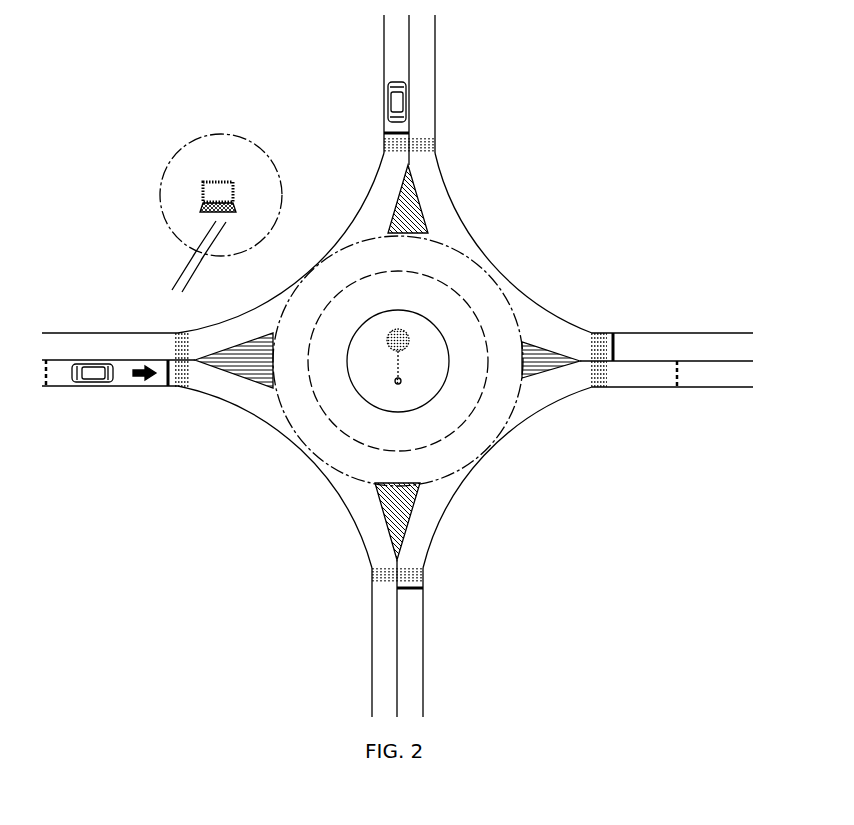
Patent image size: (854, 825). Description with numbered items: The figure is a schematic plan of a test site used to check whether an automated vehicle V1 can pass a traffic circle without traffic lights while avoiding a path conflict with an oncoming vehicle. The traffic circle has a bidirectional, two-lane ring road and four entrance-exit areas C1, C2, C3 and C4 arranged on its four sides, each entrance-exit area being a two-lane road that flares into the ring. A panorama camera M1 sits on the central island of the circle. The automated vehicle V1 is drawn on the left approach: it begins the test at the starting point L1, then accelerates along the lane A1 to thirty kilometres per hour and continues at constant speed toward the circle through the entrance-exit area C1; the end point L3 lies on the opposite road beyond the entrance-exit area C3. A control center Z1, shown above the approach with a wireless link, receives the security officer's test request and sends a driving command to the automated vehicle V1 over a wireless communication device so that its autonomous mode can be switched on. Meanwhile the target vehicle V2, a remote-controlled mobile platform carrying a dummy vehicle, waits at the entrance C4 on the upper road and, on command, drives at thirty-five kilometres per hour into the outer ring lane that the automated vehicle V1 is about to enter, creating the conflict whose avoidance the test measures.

The automated vehicle V1 is at (95, 358).
The target vehicle V2 is at (383, 98).
The control center Z1 is at (215, 170).
The panorama camera M1 is at (413, 357).
The lane A1 is at (118, 359).
The starting point L1 is at (52, 393).
The end point L3 is at (685, 395).
The entrance-exit area C1 is at (172, 350).
The entrance-exit area C2 is at (374, 587).
The entrance-exit area C3 is at (596, 376).
The entrance-exit area C4 is at (426, 141).